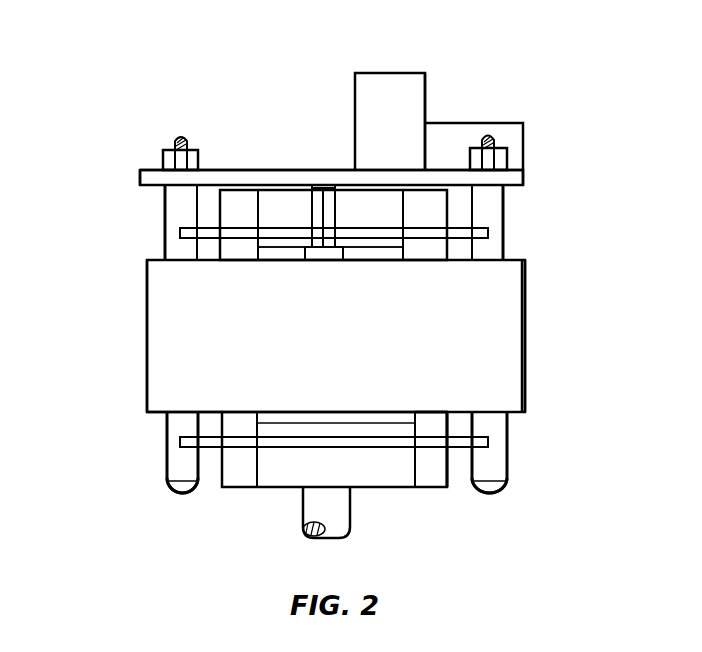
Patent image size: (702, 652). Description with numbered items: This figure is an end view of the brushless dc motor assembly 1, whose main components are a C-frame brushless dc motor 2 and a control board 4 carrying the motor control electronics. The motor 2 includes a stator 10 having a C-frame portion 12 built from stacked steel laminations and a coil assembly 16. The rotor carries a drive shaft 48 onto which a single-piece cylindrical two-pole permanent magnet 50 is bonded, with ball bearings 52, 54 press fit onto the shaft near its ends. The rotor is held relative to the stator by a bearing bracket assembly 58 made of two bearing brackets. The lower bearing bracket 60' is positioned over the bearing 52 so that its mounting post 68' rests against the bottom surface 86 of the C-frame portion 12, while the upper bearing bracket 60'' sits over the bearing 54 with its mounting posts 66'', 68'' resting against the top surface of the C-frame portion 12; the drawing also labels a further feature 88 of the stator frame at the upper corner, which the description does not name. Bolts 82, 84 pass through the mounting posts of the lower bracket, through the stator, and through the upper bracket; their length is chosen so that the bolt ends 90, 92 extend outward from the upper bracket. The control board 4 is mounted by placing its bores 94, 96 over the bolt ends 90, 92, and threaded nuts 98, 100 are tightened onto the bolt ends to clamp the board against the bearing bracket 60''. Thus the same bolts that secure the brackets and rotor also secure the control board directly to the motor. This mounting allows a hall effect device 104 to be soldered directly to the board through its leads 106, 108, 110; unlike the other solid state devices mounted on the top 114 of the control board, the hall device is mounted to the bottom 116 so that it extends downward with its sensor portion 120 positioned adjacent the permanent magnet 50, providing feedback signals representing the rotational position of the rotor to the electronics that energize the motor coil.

The motor assembly 1 is at (475, 105).
The C-frame brushless dc motor 2 is at (130, 334).
The control board 4 is at (250, 170).
The stator 10 is at (555, 352).
The C-frame portion 12 is at (360, 382).
The coil assembly 16 is at (230, 218).
The drive shaft 48 is at (352, 518).
The permanent magnet 50 is at (383, 262).
The ball bearing 52 is at (418, 430).
The ball bearing 54 is at (352, 262).
The bearing bracket assembly 58 is at (150, 235).
The bearing bracket 60' is at (254, 485).
The bearing bracket 60'' is at (333, 160).
The mounting post 66'' is at (106, 213).
The mounting post 68' is at (530, 452).
The mounting post 68'' is at (547, 222).
The bolt 82 is at (170, 492).
The bolt 84 is at (497, 490).
The bottom surface 86 is at (150, 413).
The upper corner 88 is at (150, 258).
The bolt end 90 is at (178, 137).
The bolt end 92 is at (488, 140).
The bore 94 is at (140, 178).
The bore 96 is at (523, 178).
The threaded nut 98 is at (192, 150).
The threaded nut 100 is at (507, 160).
The hall effect device 104 is at (300, 215).
The hall device lead 106 is at (298, 197).
The hall device lead 108 is at (300, 203).
The hall device lead 110 is at (338, 213).
The top of the control board 114 is at (268, 185).
The bottom of the control board 116 is at (505, 243).
The hall device sensor portion 120 is at (316, 262).